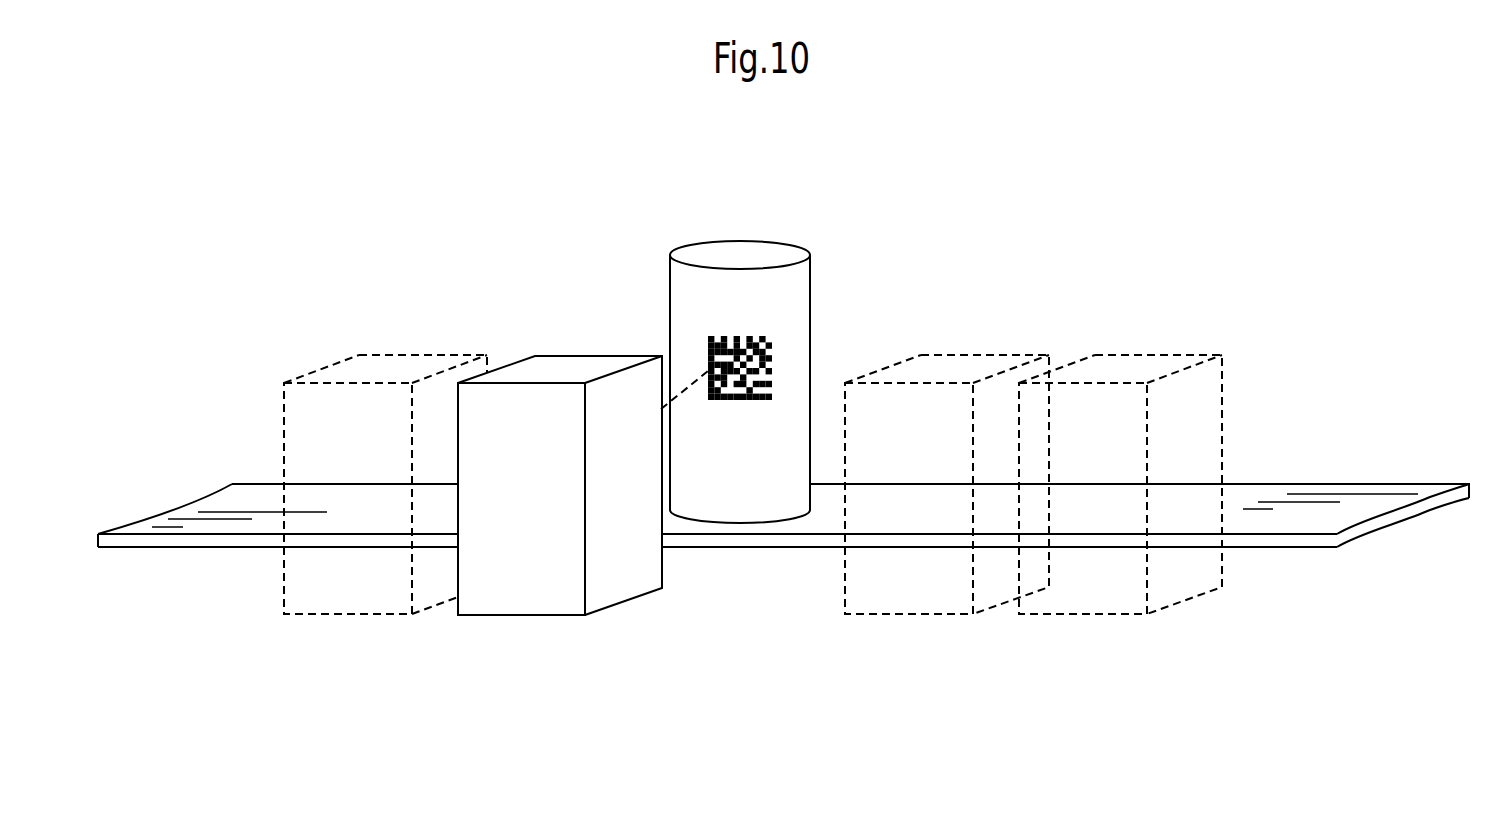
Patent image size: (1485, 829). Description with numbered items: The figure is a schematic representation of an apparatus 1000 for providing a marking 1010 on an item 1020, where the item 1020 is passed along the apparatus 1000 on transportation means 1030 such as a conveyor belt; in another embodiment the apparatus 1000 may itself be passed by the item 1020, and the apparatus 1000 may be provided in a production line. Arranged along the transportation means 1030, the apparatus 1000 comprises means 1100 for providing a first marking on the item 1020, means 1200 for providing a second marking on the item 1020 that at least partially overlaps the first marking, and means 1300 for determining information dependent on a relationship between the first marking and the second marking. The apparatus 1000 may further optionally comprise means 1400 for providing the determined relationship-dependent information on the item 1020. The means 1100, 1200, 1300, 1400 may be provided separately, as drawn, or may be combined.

The apparatus 1000 is at (193, 625).
The marking 1010 is at (773, 352).
The item 1020 is at (811, 268).
The transportation means 1030 is at (1307, 484).
The means for providing a first marking 1100 is at (347, 614).
The means for providing a second marking 1200 is at (520, 615).
The means for determining information 1300 is at (912, 614).
The means for providing the determined information 1400 is at (1083, 614).